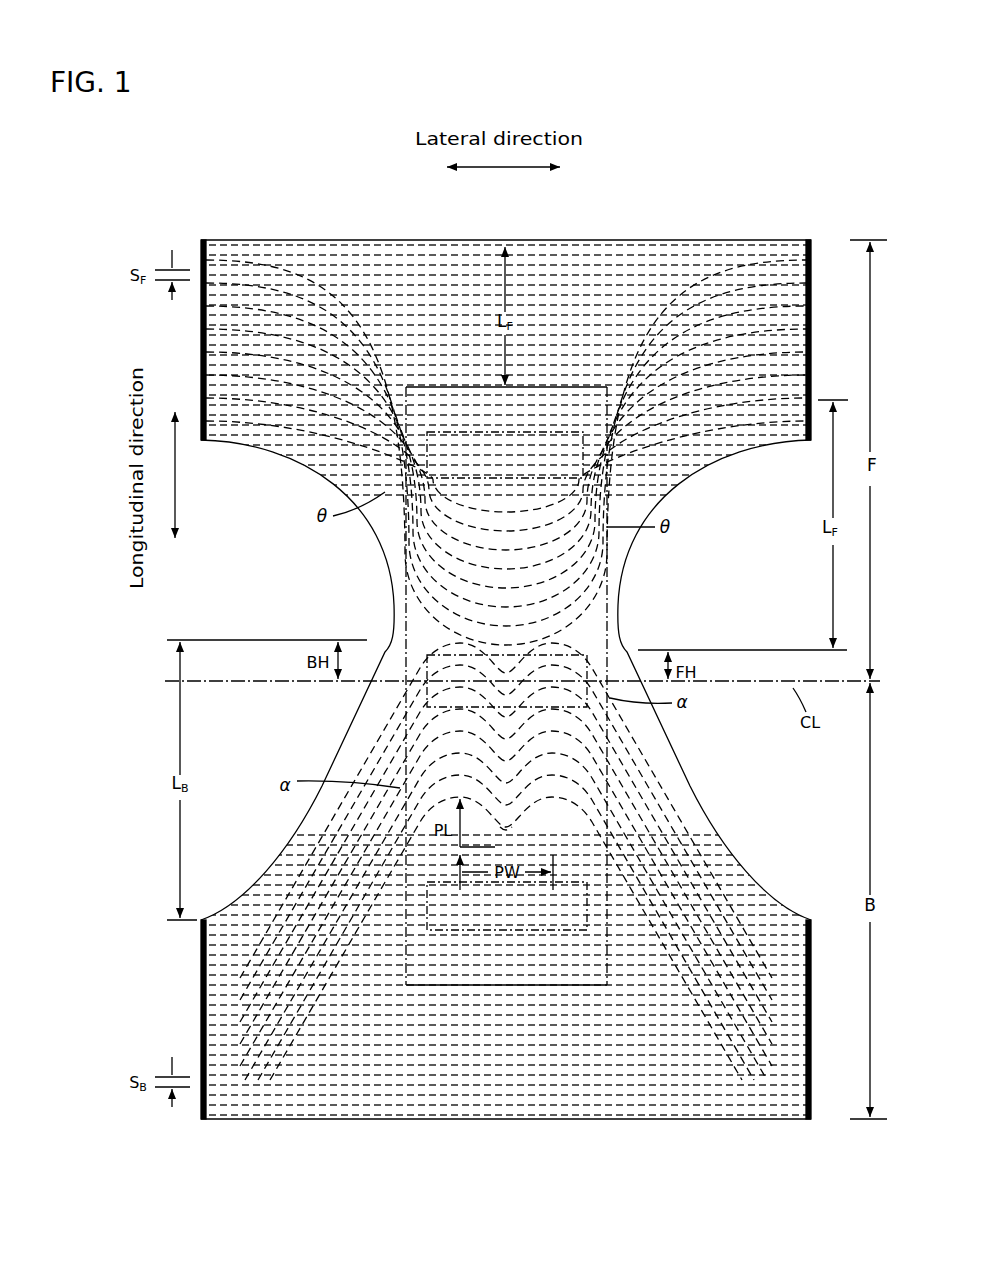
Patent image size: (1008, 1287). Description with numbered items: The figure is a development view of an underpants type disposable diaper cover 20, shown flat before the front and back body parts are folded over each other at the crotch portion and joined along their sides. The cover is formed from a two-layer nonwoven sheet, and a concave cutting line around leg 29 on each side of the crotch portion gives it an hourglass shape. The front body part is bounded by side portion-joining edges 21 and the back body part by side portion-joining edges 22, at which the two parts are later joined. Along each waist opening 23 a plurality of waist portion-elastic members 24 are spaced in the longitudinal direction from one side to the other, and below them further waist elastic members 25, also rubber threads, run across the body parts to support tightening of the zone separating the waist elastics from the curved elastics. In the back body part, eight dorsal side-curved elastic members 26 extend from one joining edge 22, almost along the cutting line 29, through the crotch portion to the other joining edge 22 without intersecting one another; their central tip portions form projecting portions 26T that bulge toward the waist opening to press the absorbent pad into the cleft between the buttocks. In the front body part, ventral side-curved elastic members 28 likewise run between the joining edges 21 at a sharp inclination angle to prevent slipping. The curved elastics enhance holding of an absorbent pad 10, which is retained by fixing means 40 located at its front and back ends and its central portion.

The absorbent pad 10 is at (605, 617).
The underpants type disposable diaper cover 20 is at (505, 677).
The side portion-joining edge 21 is at (204, 240).
The side portion-joining edge 22 is at (204, 1105).
The waist opening 23 is at (457, 240).
The waist portion-elastic members 24 is at (360, 273).
The waist elastic members 25 is at (562, 325).
The dorsal side-curved elastic members 26 is at (675, 803).
The projecting portions 26T is at (518, 798).
The ventral side-curved elastic members 28 is at (380, 466).
The cutting line around leg 29 is at (628, 557).
The fixing means 40 is at (410, 523).